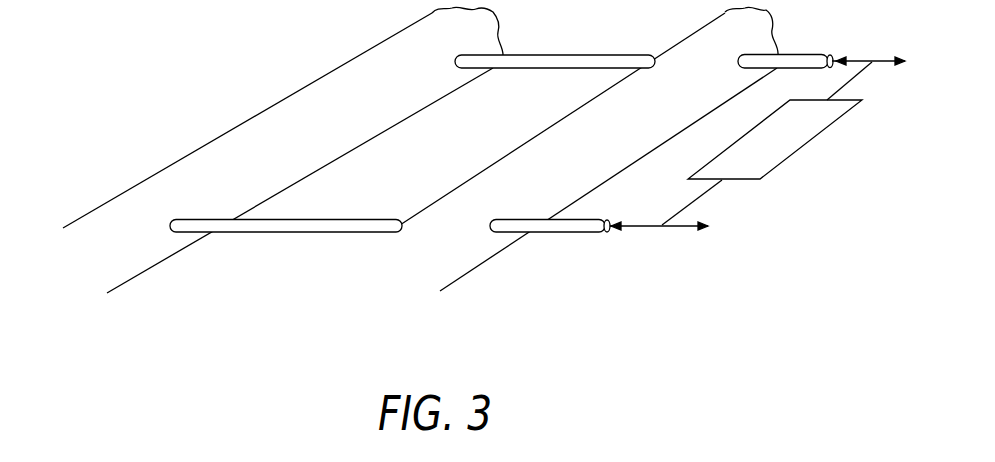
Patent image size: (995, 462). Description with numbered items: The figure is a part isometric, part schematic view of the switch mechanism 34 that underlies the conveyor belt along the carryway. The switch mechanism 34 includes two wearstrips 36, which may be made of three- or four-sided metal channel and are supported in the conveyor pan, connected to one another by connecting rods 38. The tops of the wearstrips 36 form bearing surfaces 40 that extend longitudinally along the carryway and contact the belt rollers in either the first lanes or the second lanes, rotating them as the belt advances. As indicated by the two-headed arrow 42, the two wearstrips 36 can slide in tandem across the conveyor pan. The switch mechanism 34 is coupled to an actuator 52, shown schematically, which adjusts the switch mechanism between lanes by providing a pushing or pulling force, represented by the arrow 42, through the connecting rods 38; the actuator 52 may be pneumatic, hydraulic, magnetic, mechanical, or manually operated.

The switch mechanism 34 is at (293, 61).
The wearstrips 36 is at (420, 172).
The connecting rods 38 is at (562, 62).
The bearing surfaces 40 is at (212, 148).
The two-headed arrow 42 is at (853, 62).
The actuator 52 is at (767, 167).